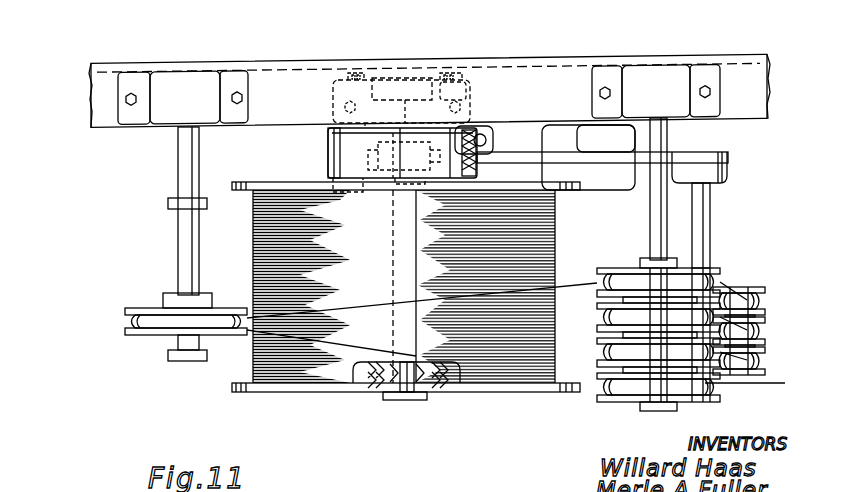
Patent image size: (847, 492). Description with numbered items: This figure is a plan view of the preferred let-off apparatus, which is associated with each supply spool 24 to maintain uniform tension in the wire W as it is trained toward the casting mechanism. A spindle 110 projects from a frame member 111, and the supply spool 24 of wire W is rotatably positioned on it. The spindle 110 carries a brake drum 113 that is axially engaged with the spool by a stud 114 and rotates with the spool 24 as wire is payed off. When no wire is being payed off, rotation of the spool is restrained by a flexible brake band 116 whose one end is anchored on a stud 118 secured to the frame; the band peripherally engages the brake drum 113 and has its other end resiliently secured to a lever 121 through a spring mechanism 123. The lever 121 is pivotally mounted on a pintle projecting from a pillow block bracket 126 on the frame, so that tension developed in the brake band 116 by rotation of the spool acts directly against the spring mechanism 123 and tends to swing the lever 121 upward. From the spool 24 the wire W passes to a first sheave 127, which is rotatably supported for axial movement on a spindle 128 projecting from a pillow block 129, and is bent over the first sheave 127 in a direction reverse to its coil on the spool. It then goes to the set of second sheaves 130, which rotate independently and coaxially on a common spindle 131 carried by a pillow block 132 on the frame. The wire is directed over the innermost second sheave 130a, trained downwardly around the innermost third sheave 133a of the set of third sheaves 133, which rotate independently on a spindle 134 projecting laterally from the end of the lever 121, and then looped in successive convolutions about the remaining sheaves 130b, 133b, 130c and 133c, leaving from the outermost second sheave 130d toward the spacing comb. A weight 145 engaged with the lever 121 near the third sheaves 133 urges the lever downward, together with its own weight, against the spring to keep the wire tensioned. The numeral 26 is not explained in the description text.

The frame member 111 is at (103, 100).
The pillow block 129 is at (176, 80).
The pillow block 132 is at (648, 70).
The stud 118 is at (370, 126).
The pillow block bracket 126 is at (466, 87).
The flexible brake band 116 is at (332, 155).
The stud 114 is at (336, 182).
The brake drum 113 is at (462, 126).
The spring mechanism 123 is at (497, 138).
The weight 145 is at (630, 151).
The common spindle 131 is at (655, 133).
The lever 121 is at (712, 160).
The spindle 134 is at (702, 193).
The spindle 128 is at (184, 237).
The first sheave 127 is at (135, 338).
The wire W is at (158, 315).
The supply spool 24 is at (318, 386).
The spindle 110 is at (406, 388).
The second sheaves 130 is at (620, 342).
The innermost second sheave 130a is at (636, 272).
The second sheave 130b is at (640, 310).
The second sheave 130c is at (598, 362).
The outermost second sheave 130d is at (598, 396).
The third sheaves 133 is at (764, 324).
The innermost third sheave 133a is at (786, 272).
The third sheave 133b is at (765, 362).
The third sheave 133c is at (764, 300).
The winding apparatus 26 is at (192, 398).